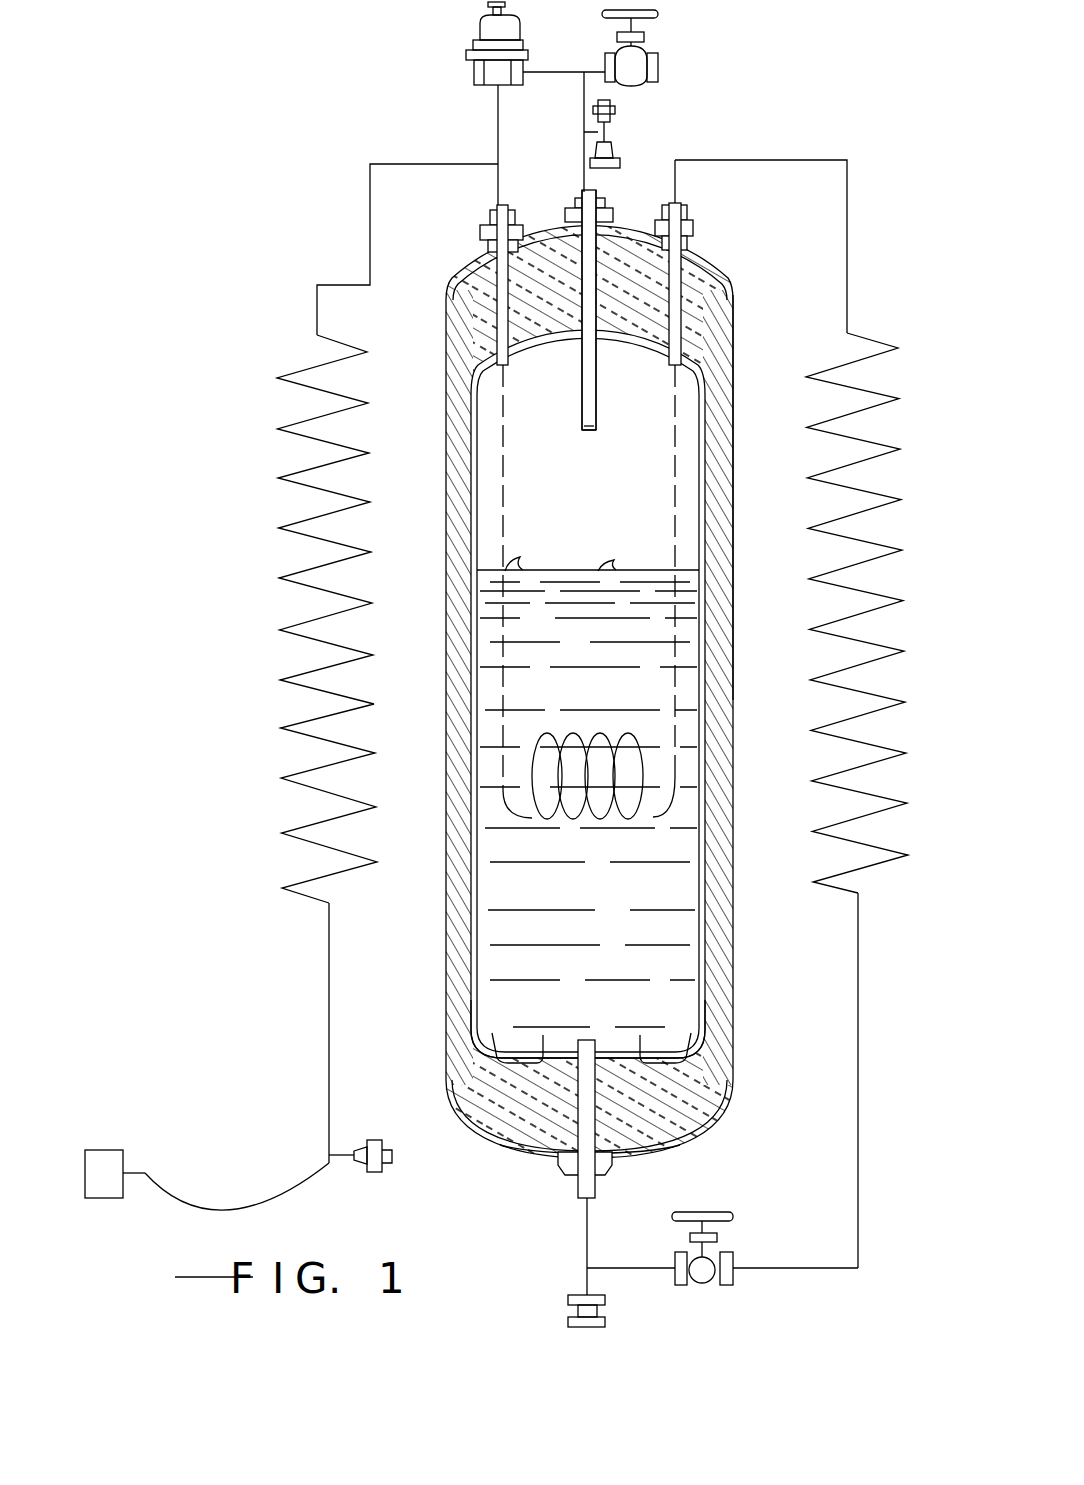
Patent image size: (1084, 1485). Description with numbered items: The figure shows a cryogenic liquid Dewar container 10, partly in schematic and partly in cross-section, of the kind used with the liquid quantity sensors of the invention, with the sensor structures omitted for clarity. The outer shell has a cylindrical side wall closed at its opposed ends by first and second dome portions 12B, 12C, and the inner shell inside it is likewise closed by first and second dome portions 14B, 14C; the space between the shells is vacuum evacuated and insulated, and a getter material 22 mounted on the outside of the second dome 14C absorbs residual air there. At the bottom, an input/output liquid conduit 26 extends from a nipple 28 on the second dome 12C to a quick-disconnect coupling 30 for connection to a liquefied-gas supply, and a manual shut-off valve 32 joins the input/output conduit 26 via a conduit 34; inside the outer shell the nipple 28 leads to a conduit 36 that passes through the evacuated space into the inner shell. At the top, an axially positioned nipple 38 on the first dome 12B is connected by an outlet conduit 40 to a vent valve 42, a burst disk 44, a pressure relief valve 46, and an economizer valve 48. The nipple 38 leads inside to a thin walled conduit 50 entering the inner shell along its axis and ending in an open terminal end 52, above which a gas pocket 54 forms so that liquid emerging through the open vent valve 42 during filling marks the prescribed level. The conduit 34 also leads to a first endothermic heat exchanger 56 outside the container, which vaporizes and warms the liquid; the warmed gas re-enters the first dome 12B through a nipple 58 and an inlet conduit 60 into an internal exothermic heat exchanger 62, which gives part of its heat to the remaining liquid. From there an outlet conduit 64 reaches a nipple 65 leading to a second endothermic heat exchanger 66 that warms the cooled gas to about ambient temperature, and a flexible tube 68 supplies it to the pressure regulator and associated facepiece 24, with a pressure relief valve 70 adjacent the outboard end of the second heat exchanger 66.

The cryogenic liquid Dewar container 10 is at (800, 60).
The first dome portion 12B is at (737, 262).
The second dome portion 12C is at (695, 1135).
The first dome portion 14B is at (722, 333).
The second dome portion 14C is at (733, 1100).
The getter material 22 is at (468, 1074).
The pressure regulator and associated facepiece 24 is at (115, 1150).
The input/output liquid conduit 26 is at (585, 1232).
The nipple 28 is at (575, 1185).
The quick-disconnect coupling 30 is at (570, 1322).
The manual shut-off valve 32 is at (703, 1288).
The conduit 34 is at (625, 1268).
The conduit 36 is at (545, 1108).
The nipple 38 is at (598, 203).
The outlet conduit 40 is at (582, 88).
The vent valve 42 is at (640, 80).
The burst disk 44 is at (618, 165).
The pressure relief valve 46 is at (616, 108).
The economizer valve 48 is at (473, 28).
The conduit 50 is at (582, 372).
The open terminal end 52 is at (590, 435).
The gas pocket 54 is at (660, 421).
The first endothermic heat exchanger 56 is at (835, 593).
The nipple 58 is at (692, 225).
The inlet conduit 60 is at (700, 258).
The internal exothermic heat exchanger 62 is at (692, 760).
The outlet conduit 64 is at (455, 280).
The nipple 65 is at (482, 216).
The second endothermic heat exchanger 66 is at (300, 575).
The flexible tube 68 is at (230, 1207).
The pressure relief valve 70 is at (370, 1174).